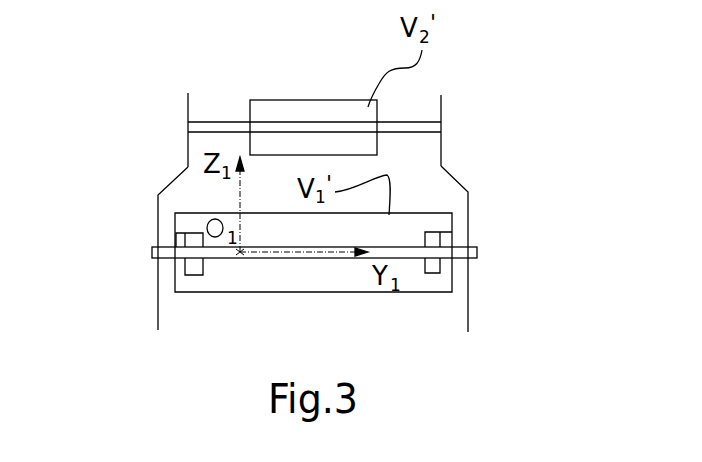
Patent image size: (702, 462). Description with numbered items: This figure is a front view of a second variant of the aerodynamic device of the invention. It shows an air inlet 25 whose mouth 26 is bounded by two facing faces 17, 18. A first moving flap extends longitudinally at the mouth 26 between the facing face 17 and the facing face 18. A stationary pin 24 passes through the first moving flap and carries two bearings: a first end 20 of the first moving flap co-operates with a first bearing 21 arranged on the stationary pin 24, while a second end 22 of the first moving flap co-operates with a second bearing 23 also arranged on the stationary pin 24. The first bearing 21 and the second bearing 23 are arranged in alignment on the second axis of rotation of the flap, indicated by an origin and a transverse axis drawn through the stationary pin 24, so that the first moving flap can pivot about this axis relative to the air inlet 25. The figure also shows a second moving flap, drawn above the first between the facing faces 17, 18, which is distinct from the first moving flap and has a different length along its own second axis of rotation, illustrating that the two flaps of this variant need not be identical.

The facing face 17 is at (188, 108).
The facing face 18 is at (441, 108).
The first end 20 is at (173, 294).
The first bearing 21 is at (200, 275).
The second end 22 is at (455, 295).
The second bearing 23 is at (424, 276).
The stationary pin 24 is at (215, 258).
The air inlet 25 is at (517, 133).
The mouth 26 is at (442, 190).